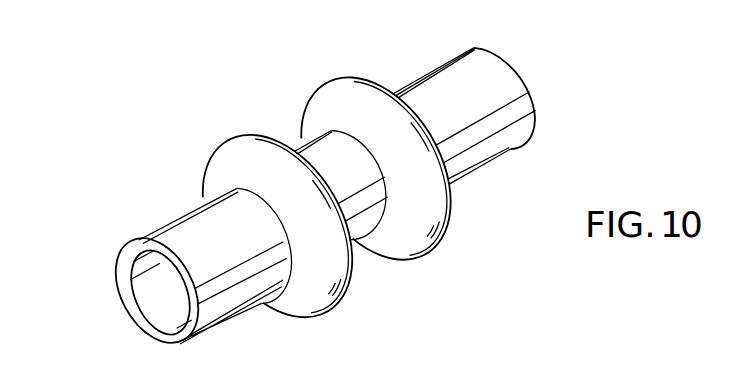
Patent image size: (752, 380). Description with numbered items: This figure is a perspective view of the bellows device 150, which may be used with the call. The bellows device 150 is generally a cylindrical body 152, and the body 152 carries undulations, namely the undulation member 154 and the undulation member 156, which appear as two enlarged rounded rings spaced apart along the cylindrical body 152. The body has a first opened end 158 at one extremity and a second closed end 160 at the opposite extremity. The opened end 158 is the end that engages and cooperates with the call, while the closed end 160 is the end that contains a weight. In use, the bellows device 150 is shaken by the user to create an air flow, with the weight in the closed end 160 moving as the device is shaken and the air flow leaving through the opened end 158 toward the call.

The bellows device 150 is at (118, 56).
The body 152 is at (450, 83).
The undulation member 154 is at (328, 98).
The undulation member 156 is at (233, 158).
The first opened end 158 is at (157, 297).
The second closed end 160 is at (525, 80).